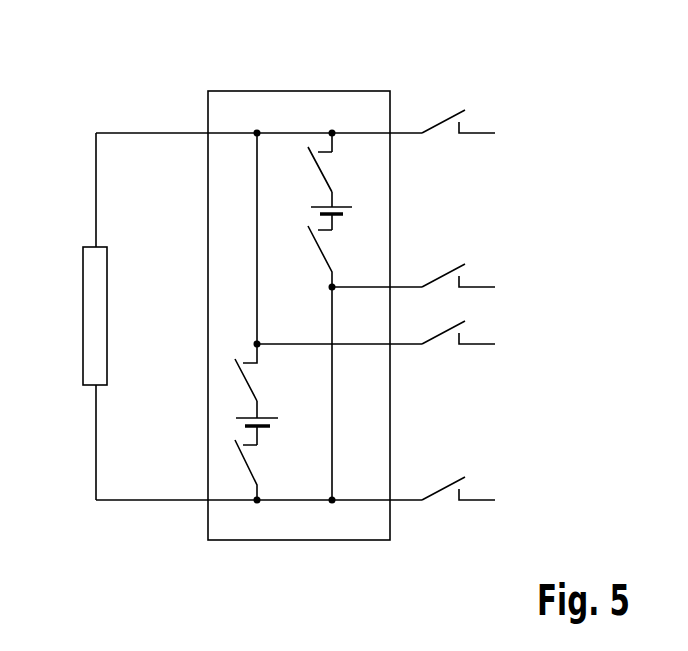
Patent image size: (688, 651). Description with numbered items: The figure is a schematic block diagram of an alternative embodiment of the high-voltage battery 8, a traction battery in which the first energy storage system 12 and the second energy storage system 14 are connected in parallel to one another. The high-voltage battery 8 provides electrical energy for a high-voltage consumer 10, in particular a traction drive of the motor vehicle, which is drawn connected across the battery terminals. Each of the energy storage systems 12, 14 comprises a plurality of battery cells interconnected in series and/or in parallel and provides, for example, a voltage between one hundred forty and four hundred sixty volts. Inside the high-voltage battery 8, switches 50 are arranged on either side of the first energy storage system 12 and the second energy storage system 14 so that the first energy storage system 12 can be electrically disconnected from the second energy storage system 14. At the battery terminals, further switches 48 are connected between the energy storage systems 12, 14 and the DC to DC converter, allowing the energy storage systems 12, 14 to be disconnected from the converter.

The high-voltage battery 8 is at (298, 91).
The high-voltage consumer 10 is at (82, 317).
The first energy storage system 12 is at (288, 220).
The second energy storage system 14 is at (217, 423).
The switches 48 is at (445, 118).
The switches 50 is at (288, 179).